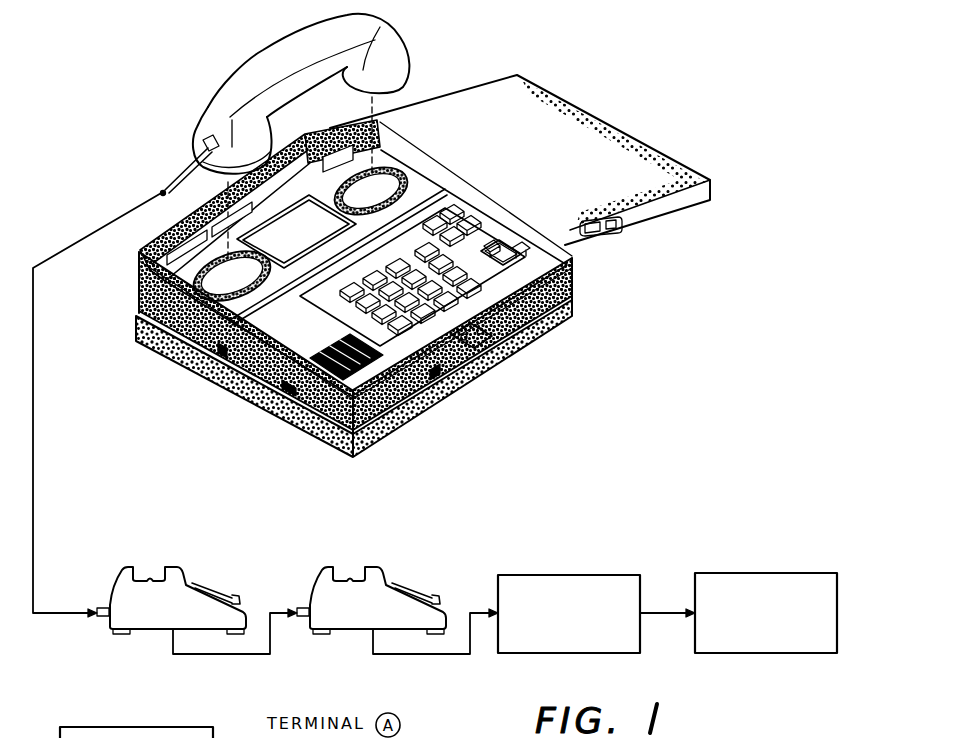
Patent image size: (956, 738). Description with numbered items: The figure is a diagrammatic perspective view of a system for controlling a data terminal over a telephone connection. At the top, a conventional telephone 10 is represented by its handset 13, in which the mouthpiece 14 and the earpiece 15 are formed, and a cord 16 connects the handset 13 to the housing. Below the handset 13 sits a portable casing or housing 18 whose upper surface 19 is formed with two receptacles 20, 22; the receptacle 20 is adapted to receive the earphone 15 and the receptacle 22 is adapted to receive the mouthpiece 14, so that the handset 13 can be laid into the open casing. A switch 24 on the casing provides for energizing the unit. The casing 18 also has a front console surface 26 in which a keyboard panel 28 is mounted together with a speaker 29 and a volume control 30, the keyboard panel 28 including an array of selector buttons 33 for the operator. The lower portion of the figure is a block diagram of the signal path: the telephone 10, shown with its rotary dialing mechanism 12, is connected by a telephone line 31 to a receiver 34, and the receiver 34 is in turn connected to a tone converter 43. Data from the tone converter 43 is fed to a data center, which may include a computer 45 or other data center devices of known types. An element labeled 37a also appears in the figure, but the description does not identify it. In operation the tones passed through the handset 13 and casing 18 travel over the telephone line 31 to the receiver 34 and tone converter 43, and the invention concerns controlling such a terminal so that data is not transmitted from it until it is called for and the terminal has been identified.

The conventional telephone 10 is at (125, 578).
The rotary dialing mechanism 12 is at (213, 588).
The handset 13 is at (270, 45).
The mouthpiece 14 is at (200, 168).
The earpiece 15 is at (410, 87).
The cord 16 is at (35, 412).
The portable casing or housing 18 is at (257, 387).
The upper surface 19 is at (317, 197).
The receptacle 20 is at (390, 193).
The receptacle 22 is at (210, 290).
The switch 24 is at (490, 245).
The front console surface 26 is at (333, 262).
The keyboard panel 28 is at (470, 347).
The speaker 29 is at (330, 380).
The volume control 30 is at (514, 243).
The telephone line 31 is at (250, 657).
The selector buttons 33 is at (370, 256).
The receiver 34 is at (322, 580).
The terminal 37a is at (77, 733).
The tone converter 43 is at (553, 573).
The computer 45 is at (750, 573).